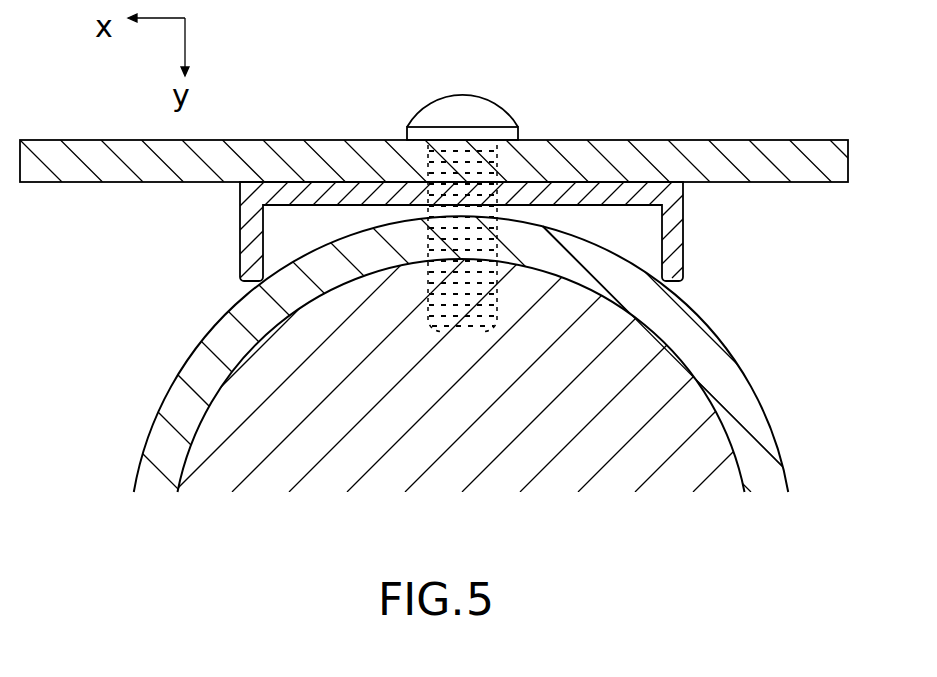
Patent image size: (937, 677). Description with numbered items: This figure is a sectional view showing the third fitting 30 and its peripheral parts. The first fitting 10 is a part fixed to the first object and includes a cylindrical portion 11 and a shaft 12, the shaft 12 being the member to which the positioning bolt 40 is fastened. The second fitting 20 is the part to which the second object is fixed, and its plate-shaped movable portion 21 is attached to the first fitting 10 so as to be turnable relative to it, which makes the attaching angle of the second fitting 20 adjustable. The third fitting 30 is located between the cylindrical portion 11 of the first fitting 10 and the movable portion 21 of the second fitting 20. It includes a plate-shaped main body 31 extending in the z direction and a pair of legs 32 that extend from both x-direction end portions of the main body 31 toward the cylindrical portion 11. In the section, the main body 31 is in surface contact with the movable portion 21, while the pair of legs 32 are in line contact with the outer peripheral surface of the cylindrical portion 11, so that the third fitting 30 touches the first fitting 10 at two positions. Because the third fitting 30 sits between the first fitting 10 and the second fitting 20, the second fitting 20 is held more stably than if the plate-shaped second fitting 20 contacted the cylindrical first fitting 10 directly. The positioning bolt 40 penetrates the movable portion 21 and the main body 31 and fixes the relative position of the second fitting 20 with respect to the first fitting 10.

The first fitting 10 is at (518, 405).
The cylindrical portion 11 is at (700, 335).
The shaft 12 is at (722, 470).
The second fitting 20 is at (446, 122).
The movable portion 21 is at (722, 162).
The third fitting 30 is at (478, 233).
The main body 31 is at (320, 201).
The pair of legs 32 is at (242, 233).
The positioning bolt 40 is at (478, 106).